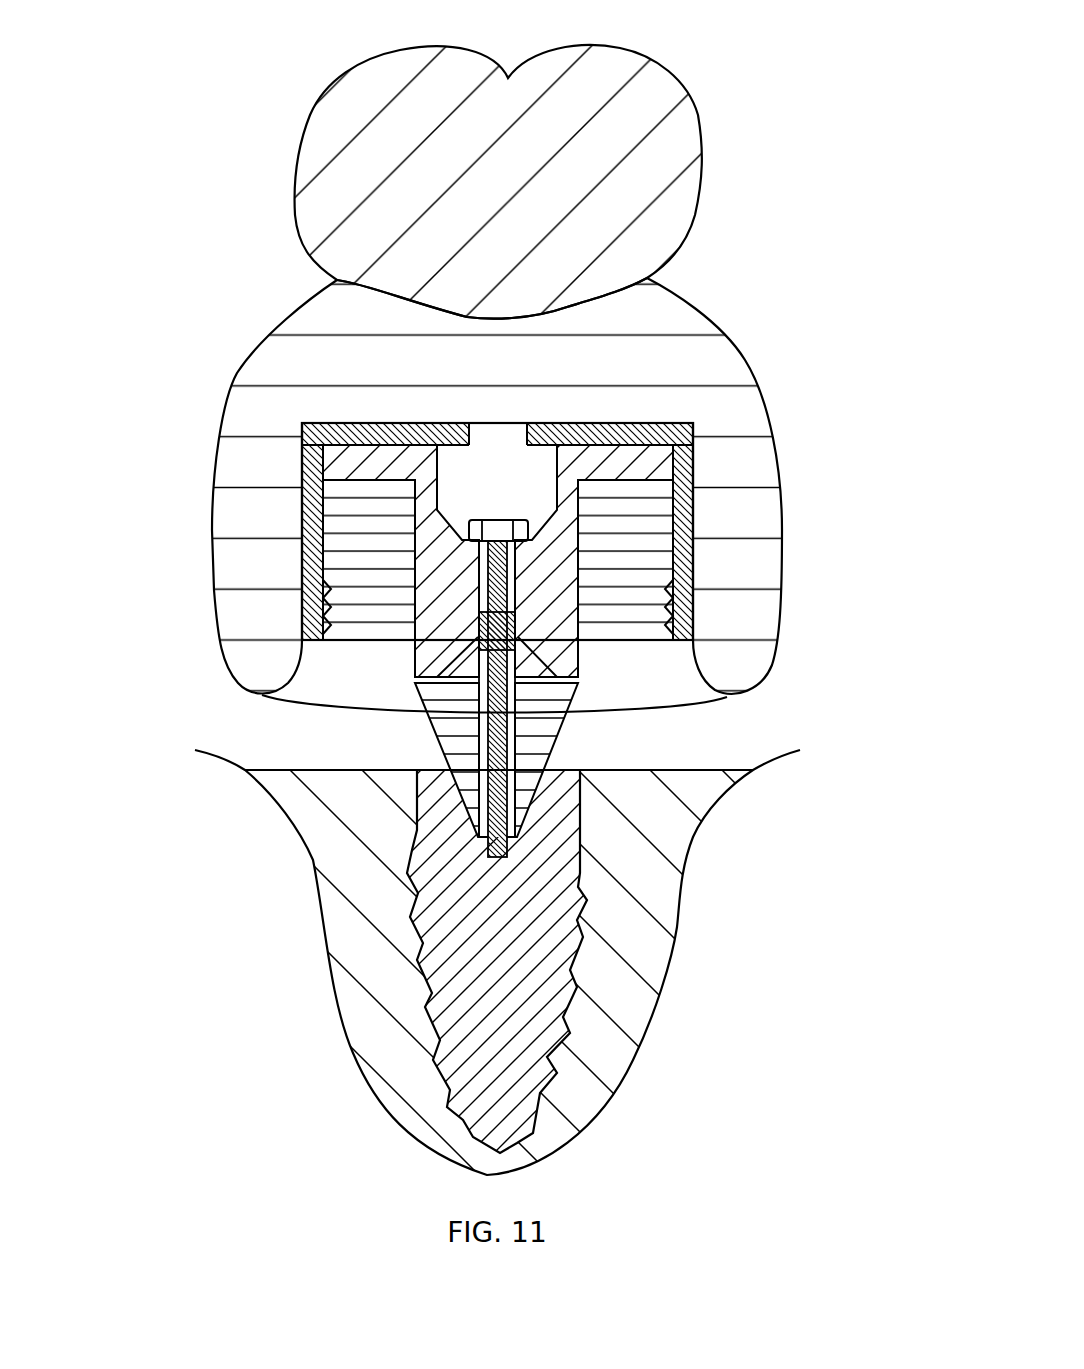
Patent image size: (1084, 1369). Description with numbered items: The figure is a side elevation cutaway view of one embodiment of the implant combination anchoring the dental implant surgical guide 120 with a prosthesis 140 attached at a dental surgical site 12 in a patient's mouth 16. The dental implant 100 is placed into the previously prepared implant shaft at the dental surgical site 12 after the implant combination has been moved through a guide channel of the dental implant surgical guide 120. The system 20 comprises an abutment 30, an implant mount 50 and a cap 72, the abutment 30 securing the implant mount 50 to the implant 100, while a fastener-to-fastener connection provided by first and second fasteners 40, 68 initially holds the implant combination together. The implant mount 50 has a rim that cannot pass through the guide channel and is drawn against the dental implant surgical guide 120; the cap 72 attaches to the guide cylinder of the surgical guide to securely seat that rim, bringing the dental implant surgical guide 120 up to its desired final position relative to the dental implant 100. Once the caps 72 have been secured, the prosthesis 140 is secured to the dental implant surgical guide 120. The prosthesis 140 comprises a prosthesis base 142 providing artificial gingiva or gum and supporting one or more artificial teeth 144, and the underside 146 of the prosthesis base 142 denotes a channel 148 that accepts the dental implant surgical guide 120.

The dental surgical site 12 is at (665, 882).
The patient's mouth 16 is at (480, 605).
The system 20 is at (501, 551).
The abutment 30 is at (570, 746).
The first fastener 40 is at (500, 585).
The implant mount 50 is at (573, 660).
The second fastener 68 is at (478, 673).
The cap 72 is at (312, 573).
The dental implant 100 is at (550, 1062).
The dental implant surgical guide 120 is at (648, 524).
The prosthesis 140 is at (506, 391).
The prosthesis base 142 is at (740, 410).
The artificial teeth 144 is at (300, 158).
The underside 146 is at (497, 423).
The channel 148 is at (311, 678).